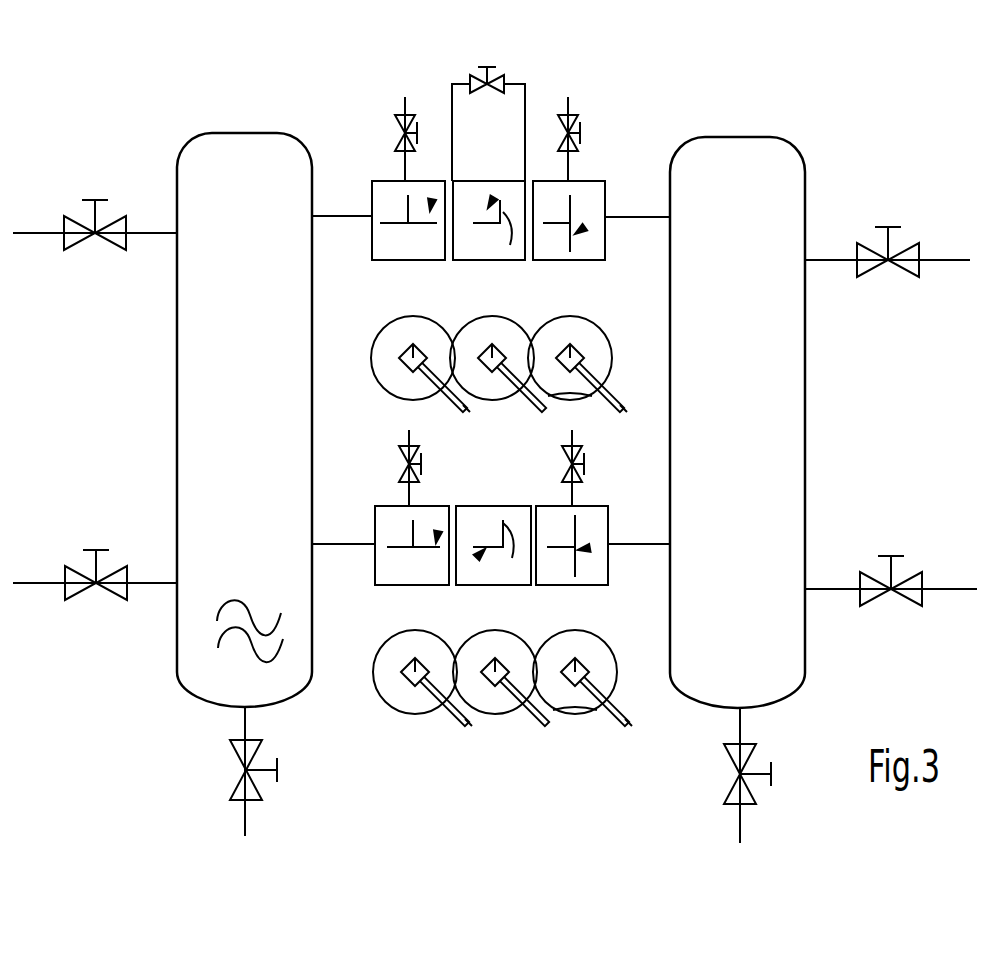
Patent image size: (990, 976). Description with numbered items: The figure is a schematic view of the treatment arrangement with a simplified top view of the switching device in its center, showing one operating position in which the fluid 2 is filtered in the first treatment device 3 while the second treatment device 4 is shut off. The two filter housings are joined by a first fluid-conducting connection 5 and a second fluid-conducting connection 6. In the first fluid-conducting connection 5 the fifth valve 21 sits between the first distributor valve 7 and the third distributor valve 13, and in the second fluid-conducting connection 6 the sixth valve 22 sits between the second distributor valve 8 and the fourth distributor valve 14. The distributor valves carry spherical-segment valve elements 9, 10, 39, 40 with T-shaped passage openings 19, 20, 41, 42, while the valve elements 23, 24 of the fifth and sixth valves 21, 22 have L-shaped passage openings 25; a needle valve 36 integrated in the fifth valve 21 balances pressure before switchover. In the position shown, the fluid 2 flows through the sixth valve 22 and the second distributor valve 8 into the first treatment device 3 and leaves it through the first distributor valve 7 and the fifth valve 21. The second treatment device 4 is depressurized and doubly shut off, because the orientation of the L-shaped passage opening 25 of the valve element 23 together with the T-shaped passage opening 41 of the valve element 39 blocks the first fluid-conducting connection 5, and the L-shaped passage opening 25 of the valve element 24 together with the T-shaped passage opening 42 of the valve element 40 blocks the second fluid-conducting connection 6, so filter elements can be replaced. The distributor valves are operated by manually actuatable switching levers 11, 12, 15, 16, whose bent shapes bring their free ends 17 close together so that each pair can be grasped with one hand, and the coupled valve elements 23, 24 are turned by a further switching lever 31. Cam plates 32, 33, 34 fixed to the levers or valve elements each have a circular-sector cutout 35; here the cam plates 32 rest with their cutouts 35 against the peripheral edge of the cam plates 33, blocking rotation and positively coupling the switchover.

The fluid 2 is at (235, 652).
The first treatment device 3 is at (173, 439).
The second treatment device 4 is at (809, 418).
The first fluid-conducting connection 5 is at (355, 214).
The second fluid-conducting connection 6 is at (362, 543).
The first distributor valve 7 is at (385, 181).
The second distributor valve 8 is at (390, 506).
The valve element 9 is at (397, 226).
The valve element 10 is at (438, 535).
The first switching lever 11 is at (435, 385).
The second switching lever 12 is at (445, 713).
The third distributor valve 13 is at (595, 181).
The fourth distributor valve 14 is at (595, 506).
The third switching lever 15 is at (610, 392).
The fourth switching lever 16 is at (612, 713).
The free end 17 is at (464, 408).
The passage opening 19 is at (432, 203).
The passage opening 20 is at (415, 537).
The fifth valve 21 is at (478, 181).
The sixth valve 22 is at (488, 506).
The valve element 23 is at (510, 245).
The valve element 24 is at (512, 558).
The L-shaped passage opening 25 is at (491, 203).
The switching lever 31 is at (533, 402).
The cam plate 32 is at (388, 325).
The cam plate 33 is at (497, 316).
The cam plate 34 is at (578, 316).
The cutout 35 is at (574, 401).
The needle valve 36 is at (497, 77).
The valve element 39 is at (573, 203).
The valve element 40 is at (580, 535).
The passage opening 41 is at (579, 231).
The passage opening 42 is at (582, 551).